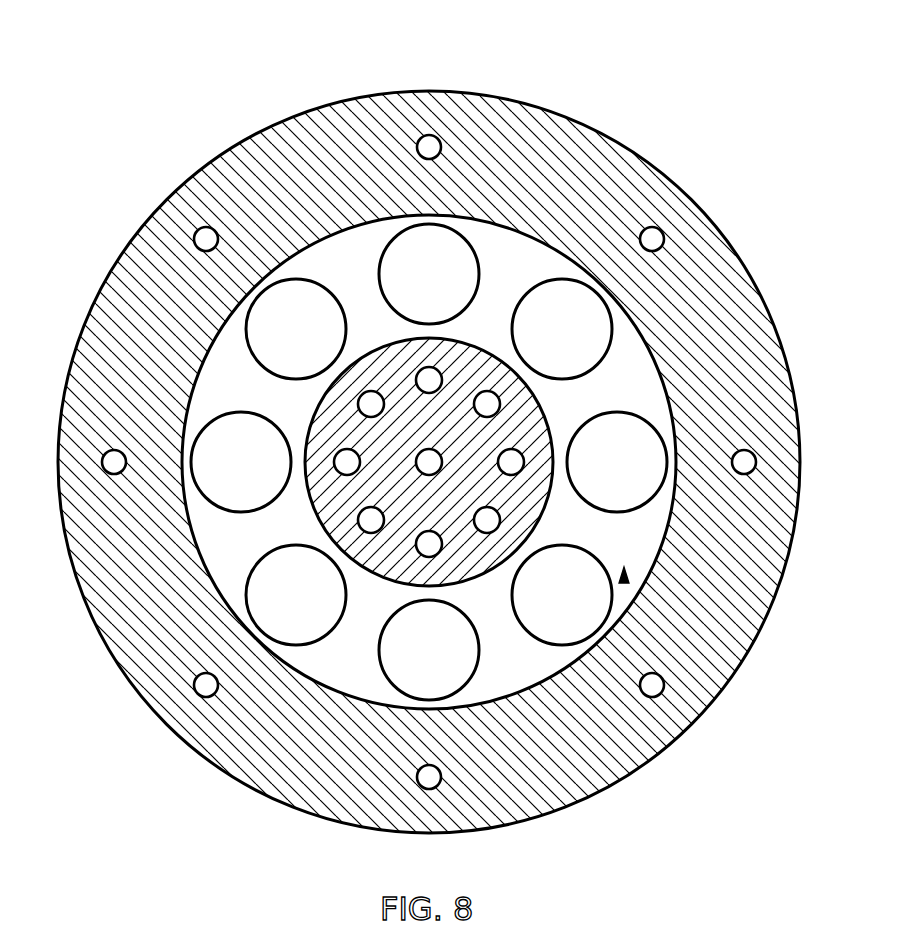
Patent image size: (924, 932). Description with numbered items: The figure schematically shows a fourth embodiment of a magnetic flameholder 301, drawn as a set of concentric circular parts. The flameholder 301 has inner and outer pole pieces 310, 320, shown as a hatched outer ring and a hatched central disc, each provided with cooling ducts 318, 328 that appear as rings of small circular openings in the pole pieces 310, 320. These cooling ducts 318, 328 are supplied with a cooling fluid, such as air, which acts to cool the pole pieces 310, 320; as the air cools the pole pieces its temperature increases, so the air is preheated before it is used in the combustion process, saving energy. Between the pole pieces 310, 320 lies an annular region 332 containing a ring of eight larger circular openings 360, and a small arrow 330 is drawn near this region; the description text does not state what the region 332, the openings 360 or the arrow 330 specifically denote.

The magnetic flameholder 301 is at (778, 42).
The pole piece 310 is at (622, 200).
The cooling duct 318 is at (438, 136).
The pole piece 320 is at (345, 431).
The cooling duct 328 is at (512, 460).
The flow direction arrow 330 is at (626, 583).
The intermediate annular plate 332 is at (352, 653).
The large openings 360 is at (615, 330).